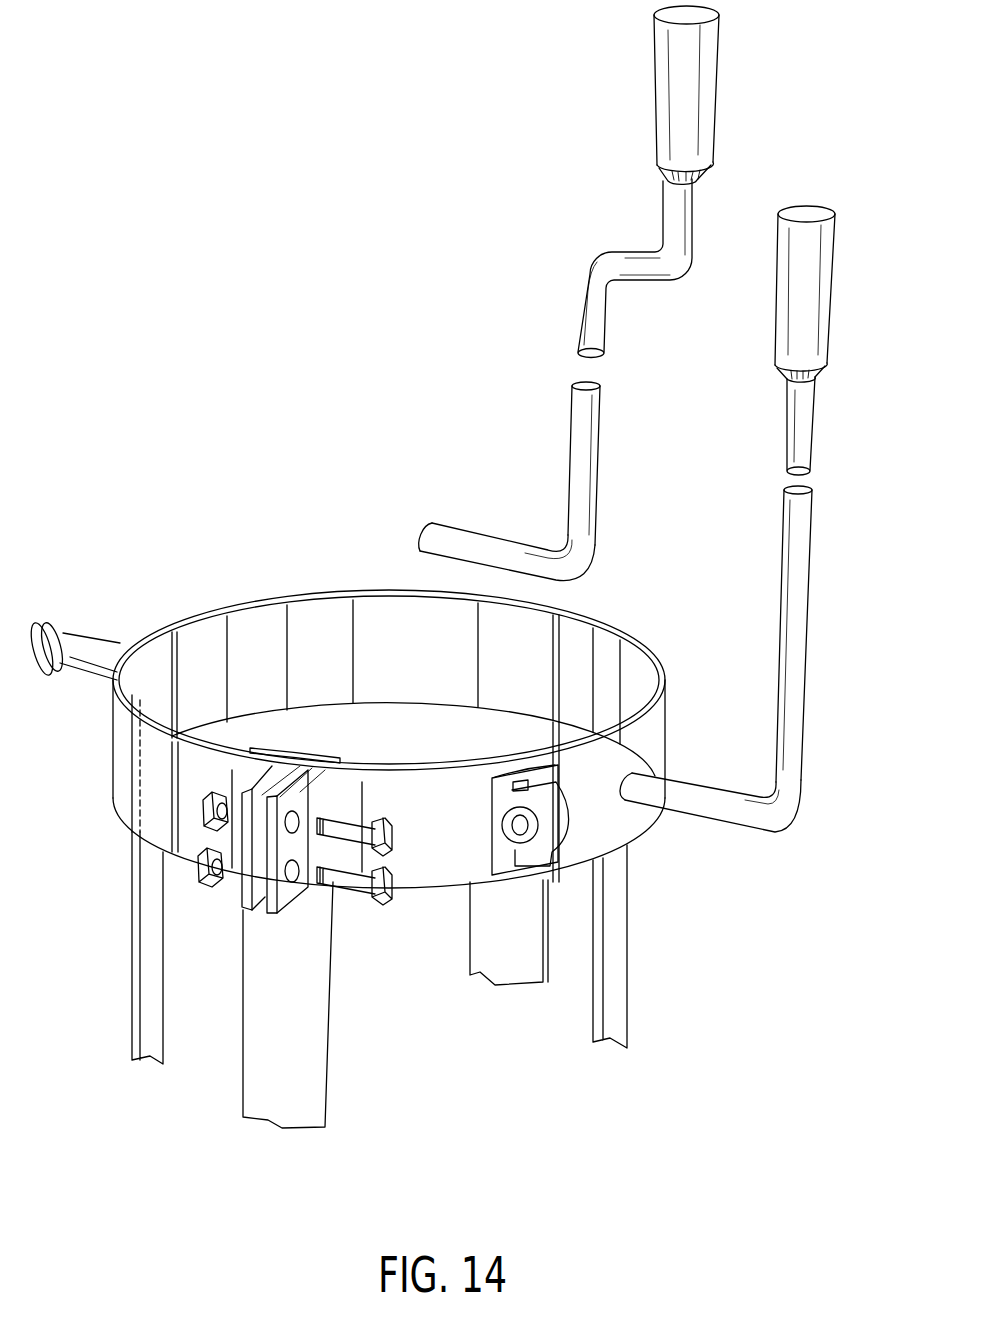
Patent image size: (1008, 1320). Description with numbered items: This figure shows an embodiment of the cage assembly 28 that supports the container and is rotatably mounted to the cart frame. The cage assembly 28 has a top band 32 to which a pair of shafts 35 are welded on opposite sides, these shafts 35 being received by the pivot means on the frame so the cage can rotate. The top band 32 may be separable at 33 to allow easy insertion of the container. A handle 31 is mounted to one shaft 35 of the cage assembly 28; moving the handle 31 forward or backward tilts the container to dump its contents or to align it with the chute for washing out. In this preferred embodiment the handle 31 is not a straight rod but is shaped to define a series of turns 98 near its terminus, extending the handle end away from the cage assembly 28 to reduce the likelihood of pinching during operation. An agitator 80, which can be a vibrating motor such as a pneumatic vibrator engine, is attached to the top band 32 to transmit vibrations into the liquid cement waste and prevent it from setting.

The cage assembly 28 is at (253, 1123).
The handle 31 is at (707, 70).
The top band 32 is at (445, 862).
The separable point of top band 33 is at (243, 892).
The shafts 35 is at (483, 543).
The agitator 80 is at (562, 820).
The series of turns 98 is at (590, 262).